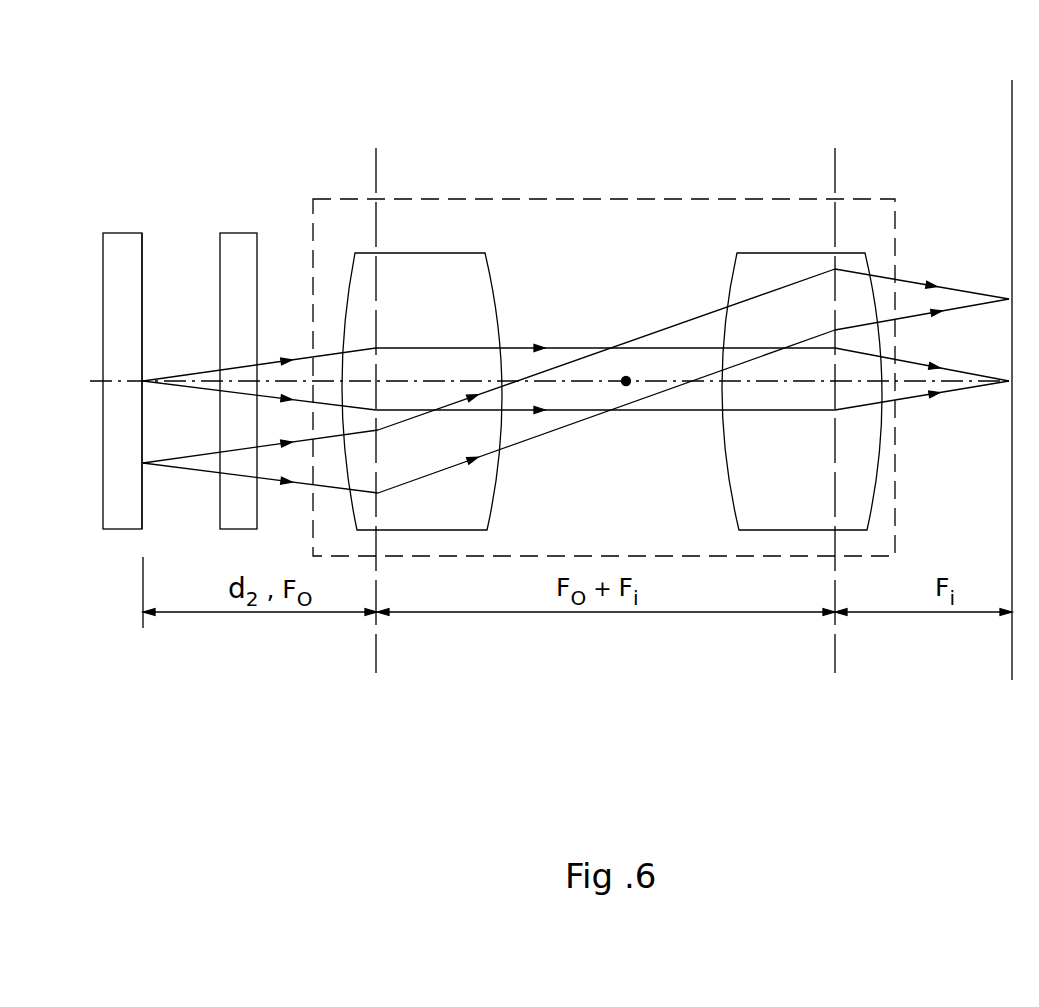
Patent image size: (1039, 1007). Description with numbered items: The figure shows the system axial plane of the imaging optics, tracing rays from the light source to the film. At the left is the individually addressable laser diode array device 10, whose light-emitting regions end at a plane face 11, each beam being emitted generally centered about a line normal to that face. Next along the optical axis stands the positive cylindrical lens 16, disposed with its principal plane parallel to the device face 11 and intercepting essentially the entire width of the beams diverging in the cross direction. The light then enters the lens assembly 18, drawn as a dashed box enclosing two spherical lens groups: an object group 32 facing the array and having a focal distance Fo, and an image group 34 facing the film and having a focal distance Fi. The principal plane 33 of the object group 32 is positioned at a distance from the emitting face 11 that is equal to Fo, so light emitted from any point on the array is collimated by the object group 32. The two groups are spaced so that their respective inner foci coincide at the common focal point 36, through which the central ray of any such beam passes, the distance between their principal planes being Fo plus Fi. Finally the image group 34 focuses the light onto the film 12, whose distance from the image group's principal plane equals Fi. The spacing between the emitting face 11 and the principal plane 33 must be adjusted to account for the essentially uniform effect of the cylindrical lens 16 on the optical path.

The individually addressable laser diode array device 10 is at (119, 232).
The plane face 11 is at (143, 252).
The positive cylindrical lens 16 is at (251, 229).
The lens assembly 18 is at (665, 199).
The object group 32 is at (457, 252).
The principal plane of object group 33 is at (377, 172).
The image group 34 is at (866, 253).
The common focal point 36 is at (626, 381).
The film 12 is at (1011, 108).